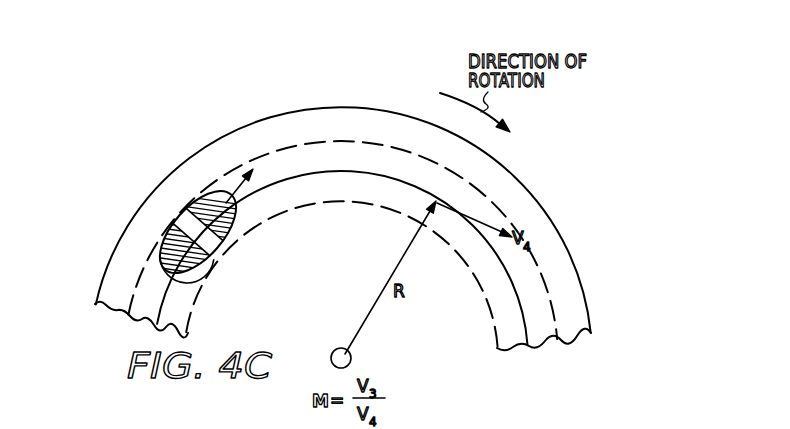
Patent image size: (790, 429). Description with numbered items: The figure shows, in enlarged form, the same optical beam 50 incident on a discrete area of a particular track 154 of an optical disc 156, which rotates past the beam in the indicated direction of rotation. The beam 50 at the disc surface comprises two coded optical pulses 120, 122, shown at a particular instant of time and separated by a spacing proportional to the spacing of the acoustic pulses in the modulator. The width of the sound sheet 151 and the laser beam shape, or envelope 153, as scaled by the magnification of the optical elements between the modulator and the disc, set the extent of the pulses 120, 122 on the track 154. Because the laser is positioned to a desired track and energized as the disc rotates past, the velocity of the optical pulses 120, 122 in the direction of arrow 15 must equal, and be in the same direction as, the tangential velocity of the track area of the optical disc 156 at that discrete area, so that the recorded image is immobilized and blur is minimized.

The arrow 15 is at (335, 168).
The optical beam 50 is at (163, 204).
The optical pulse 120 is at (193, 204).
The optical pulse 122 is at (167, 243).
The sound sheet 151 is at (315, 140).
The laser beam envelope 153 is at (189, 282).
The track 154 is at (523, 305).
The optical disc 156 is at (522, 207).